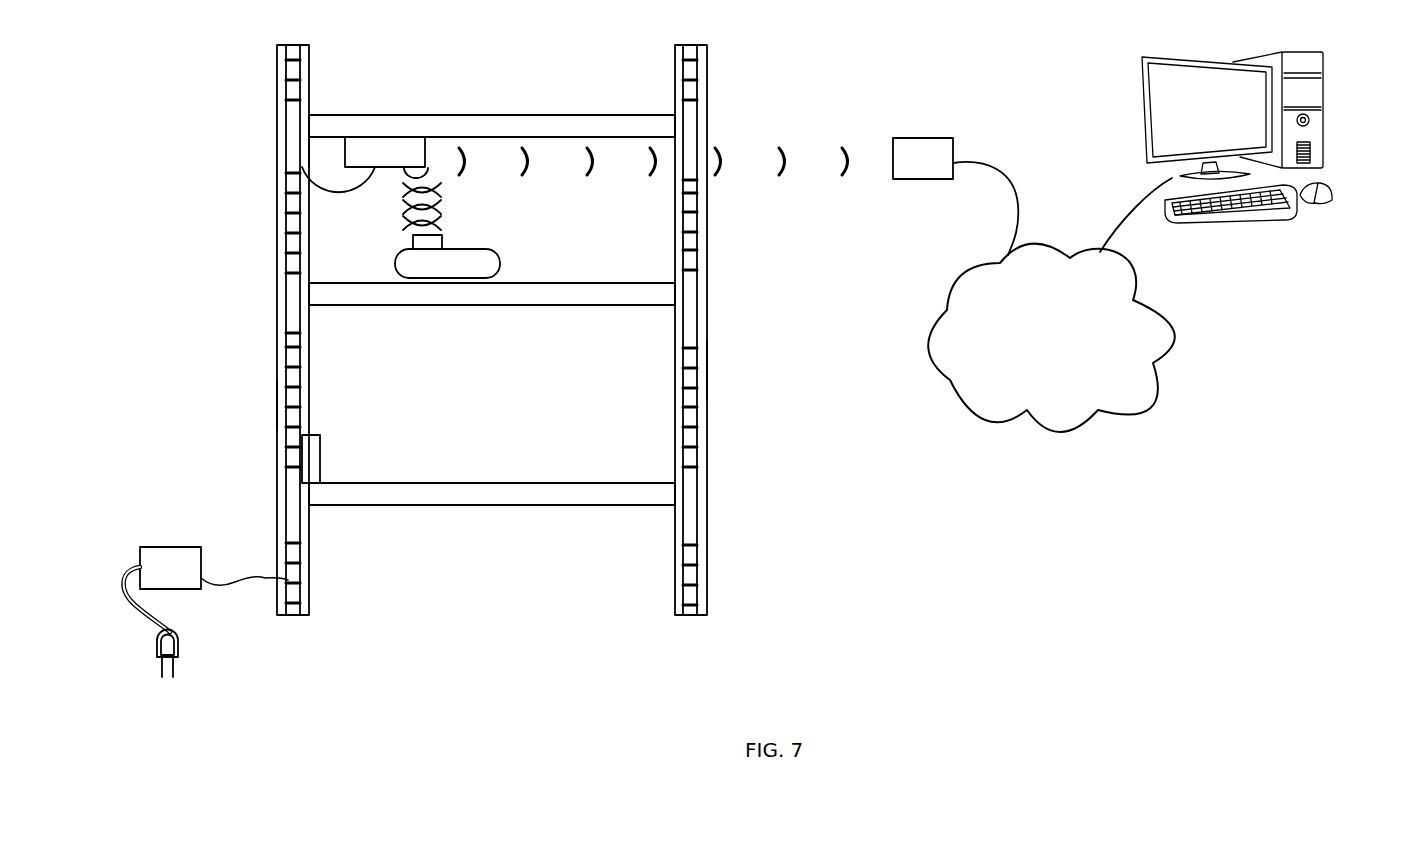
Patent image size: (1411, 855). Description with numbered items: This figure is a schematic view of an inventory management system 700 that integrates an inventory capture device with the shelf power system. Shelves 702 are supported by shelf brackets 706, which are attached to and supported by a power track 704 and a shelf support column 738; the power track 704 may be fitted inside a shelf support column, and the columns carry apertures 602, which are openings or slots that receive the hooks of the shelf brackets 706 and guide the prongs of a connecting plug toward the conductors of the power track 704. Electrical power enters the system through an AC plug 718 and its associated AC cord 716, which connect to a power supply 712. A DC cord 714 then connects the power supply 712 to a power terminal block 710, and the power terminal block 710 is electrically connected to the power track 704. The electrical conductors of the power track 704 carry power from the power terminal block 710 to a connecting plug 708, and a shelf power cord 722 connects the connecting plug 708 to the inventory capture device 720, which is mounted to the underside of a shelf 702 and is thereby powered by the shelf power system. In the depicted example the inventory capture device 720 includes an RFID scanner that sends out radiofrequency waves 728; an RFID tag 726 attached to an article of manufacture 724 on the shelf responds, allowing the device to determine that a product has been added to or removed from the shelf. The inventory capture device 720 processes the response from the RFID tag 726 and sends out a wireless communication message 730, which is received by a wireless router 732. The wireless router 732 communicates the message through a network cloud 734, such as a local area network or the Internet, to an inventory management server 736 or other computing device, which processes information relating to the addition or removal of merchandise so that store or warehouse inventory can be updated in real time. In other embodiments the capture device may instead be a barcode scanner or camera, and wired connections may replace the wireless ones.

The inventory management system 700 is at (1305, 417).
The apertures 602 is at (292, 62).
The shelf 702 is at (608, 122).
The power track 704 is at (285, 403).
The shelf brackets 706 is at (700, 147).
The connecting plug 708 is at (310, 152).
The power terminal block 710 is at (322, 450).
The power supply 712 is at (157, 545).
The DC cord 714 is at (262, 578).
The AC cord 716 is at (120, 586).
The AC plug 718 is at (180, 645).
The inventory capture device 720 is at (425, 148).
The shelf power cord 722 is at (343, 194).
The article of manufacture 724 is at (499, 265).
The RFID tag 726 is at (443, 241).
The radiofrequency waves 728 is at (440, 206).
The wireless communication message 730 is at (788, 157).
The wireless router 732 is at (929, 137).
The network cloud 734 is at (1080, 340).
The inventory management server 736 is at (1333, 53).
The shelf support column 738 is at (706, 368).